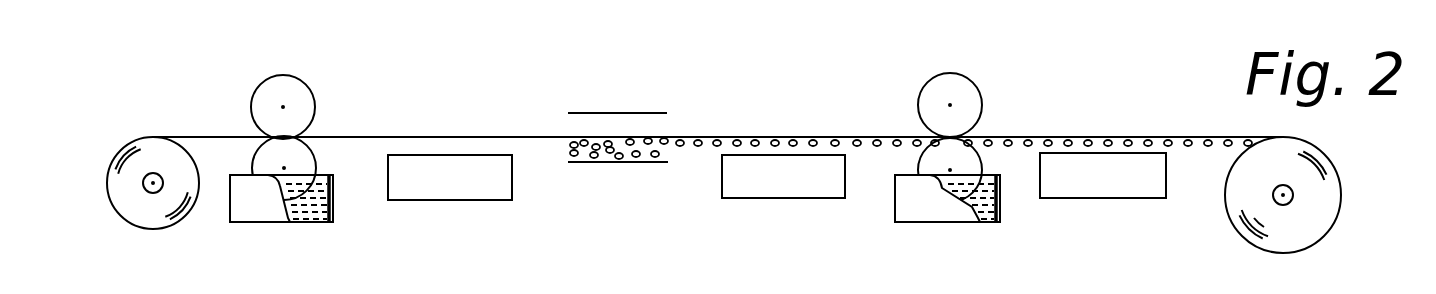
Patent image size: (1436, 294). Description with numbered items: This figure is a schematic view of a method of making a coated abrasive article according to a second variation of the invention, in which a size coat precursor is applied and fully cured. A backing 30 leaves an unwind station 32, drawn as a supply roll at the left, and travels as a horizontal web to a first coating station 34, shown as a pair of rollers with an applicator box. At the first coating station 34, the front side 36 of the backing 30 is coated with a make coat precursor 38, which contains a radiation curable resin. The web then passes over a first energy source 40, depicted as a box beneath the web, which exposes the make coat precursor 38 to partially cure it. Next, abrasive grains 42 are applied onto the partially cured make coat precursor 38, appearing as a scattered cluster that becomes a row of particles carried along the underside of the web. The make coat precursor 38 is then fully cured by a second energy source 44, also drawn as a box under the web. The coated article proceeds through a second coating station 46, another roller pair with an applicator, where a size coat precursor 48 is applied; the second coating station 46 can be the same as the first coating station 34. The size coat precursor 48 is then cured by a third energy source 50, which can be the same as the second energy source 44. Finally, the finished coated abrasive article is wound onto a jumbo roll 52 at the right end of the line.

The backing 30 is at (210, 137).
The unwind station 32 is at (133, 222).
The first coating station 34 is at (260, 223).
The front side 36 is at (240, 138).
The make coat precursor 38 is at (308, 220).
The first energy source 40 is at (438, 200).
The abrasive grains 42 is at (608, 163).
The second energy source 44 is at (722, 187).
The second coating station 46 is at (895, 200).
The size coat precursor 48 is at (980, 223).
The third energy source 50 is at (1097, 198).
The jumbo roll 52 is at (1338, 222).